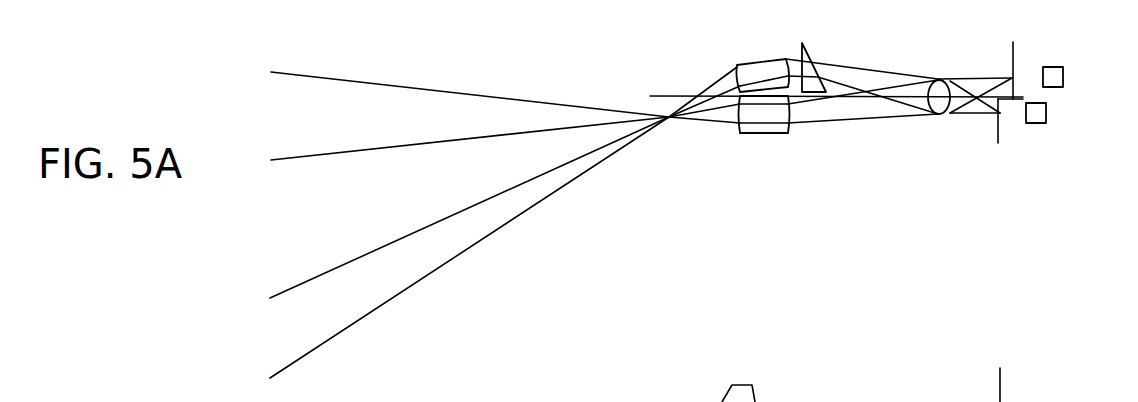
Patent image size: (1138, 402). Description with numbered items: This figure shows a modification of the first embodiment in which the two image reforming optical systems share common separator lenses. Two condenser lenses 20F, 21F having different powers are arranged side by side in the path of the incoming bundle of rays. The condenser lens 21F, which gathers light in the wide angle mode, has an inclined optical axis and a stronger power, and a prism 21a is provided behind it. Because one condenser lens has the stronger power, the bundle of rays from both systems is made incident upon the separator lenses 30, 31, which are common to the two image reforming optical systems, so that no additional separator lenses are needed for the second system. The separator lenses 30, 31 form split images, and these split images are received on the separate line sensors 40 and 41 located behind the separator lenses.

The condenser lens 20F is at (762, 134).
The condenser lens 21F is at (743, 65).
The prism 21a is at (806, 47).
The separator lens 30 is at (932, 123).
The separator lens 31 is at (944, 114).
The line sensor 40 is at (1046, 113).
The line sensor 41 is at (1063, 77).